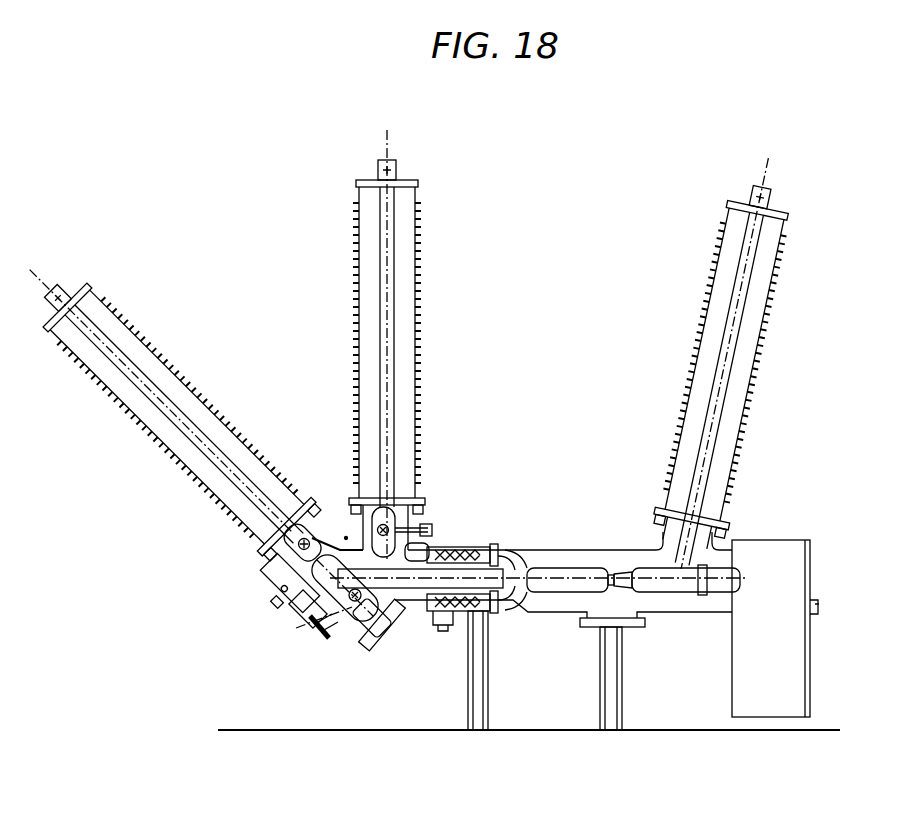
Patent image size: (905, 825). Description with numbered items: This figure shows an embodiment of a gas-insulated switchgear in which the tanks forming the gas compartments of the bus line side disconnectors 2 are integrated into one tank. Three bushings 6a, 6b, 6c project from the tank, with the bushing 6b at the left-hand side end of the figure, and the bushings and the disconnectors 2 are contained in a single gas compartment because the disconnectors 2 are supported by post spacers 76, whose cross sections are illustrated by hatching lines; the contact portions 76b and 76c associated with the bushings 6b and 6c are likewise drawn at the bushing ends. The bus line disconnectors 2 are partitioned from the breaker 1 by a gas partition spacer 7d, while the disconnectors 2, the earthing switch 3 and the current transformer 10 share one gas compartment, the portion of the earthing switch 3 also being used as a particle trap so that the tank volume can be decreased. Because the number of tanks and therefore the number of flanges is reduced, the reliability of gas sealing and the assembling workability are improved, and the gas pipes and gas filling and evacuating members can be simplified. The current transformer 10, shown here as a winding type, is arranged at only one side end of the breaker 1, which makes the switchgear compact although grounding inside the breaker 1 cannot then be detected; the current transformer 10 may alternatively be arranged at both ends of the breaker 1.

The breaker 1 is at (578, 549).
The bus line disconnectors 2 is at (432, 550).
The earthing switch 3 is at (352, 642).
The bushing 6a is at (757, 333).
The bushing 6b is at (180, 381).
The bushing 6c is at (420, 306).
The gas partition spacer 7d is at (525, 551).
The current transformer 10 is at (490, 546).
The post spacers 76 is at (340, 628).
The contact 76b is at (306, 533).
The contact 76c is at (386, 527).